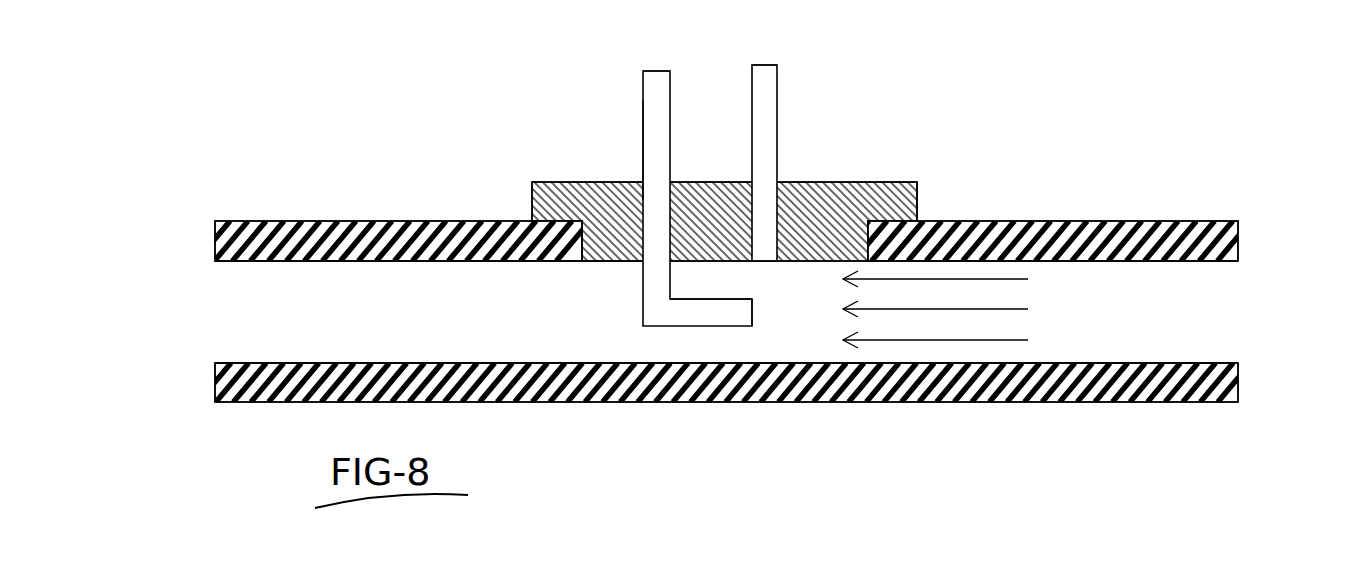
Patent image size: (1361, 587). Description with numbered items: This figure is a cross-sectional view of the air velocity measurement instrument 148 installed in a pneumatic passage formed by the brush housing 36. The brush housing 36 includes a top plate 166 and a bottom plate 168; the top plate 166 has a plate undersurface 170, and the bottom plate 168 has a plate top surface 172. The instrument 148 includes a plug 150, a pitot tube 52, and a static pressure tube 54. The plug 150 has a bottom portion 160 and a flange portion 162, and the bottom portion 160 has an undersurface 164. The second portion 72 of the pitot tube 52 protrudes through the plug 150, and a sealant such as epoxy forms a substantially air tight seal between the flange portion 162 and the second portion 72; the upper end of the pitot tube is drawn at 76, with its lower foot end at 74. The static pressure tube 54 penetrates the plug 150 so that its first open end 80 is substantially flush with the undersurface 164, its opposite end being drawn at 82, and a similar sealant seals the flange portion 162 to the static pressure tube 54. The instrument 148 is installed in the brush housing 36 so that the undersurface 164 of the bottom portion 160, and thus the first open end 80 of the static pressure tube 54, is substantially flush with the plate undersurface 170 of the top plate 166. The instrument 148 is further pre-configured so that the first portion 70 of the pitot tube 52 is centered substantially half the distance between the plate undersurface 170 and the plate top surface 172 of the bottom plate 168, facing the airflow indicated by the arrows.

The brush housing 36 is at (1032, 472).
The pitot tube 52 is at (642, 93).
The static pressure tube 54 is at (780, 119).
The first portion 70 is at (705, 298).
The second portion 72 is at (643, 132).
The lead foot end 74 is at (752, 312).
The lead tip 76 is at (657, 71).
The first open end 80 is at (778, 262).
The second lead tip 82 is at (770, 65).
The instrument 148 is at (882, 90).
The plug 150 is at (858, 178).
The bottom portion 160 is at (572, 262).
The flange portion 162 is at (917, 195).
The undersurface 164 is at (603, 262).
The top plate 166 is at (213, 236).
The bottom plate 168 is at (1242, 372).
The plate undersurface 170 is at (357, 268).
The plate top surface 172 is at (396, 362).